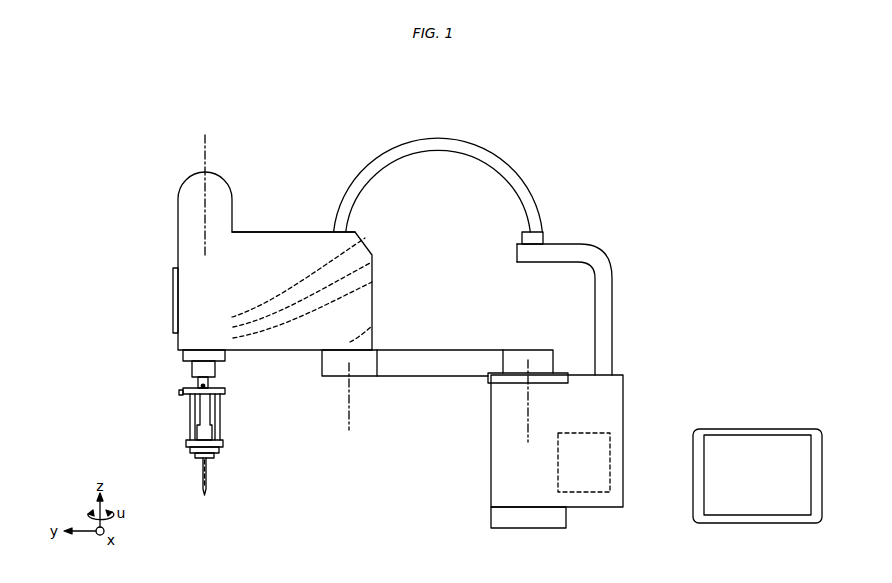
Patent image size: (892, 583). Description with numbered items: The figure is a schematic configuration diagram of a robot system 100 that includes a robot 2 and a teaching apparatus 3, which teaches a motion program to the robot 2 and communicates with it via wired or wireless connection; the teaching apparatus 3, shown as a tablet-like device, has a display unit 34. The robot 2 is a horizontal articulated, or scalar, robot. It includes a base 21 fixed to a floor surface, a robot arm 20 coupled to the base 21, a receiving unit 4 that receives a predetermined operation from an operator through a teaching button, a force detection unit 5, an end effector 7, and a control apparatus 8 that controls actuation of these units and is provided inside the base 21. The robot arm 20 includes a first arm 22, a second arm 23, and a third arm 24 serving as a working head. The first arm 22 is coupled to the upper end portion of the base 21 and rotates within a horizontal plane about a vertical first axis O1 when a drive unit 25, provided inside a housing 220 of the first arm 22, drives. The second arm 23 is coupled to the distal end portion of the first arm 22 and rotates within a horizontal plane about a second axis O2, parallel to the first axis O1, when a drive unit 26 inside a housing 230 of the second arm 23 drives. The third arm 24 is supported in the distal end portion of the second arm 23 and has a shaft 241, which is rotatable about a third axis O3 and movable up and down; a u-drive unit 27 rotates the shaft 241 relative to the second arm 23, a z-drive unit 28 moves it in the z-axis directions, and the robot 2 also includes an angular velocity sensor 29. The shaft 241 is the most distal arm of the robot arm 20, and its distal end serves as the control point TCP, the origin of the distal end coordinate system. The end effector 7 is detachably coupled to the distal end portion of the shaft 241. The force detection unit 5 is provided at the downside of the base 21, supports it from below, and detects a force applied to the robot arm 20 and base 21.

The robot system 100 is at (575, 125).
The robot 2 is at (384, 141).
The teaching apparatus 3 is at (790, 429).
The display unit 34 is at (757, 498).
The receiving unit 4 is at (173, 305).
The force detection unit 5 is at (508, 516).
The end effector 7 is at (225, 413).
The control apparatus 8 is at (610, 466).
The robot arm 20 is at (444, 350).
The base 21 is at (607, 402).
The first arm 22 is at (400, 365).
The housing 220 is at (483, 363).
The second arm 23 is at (190, 238).
The housing 230 is at (281, 228).
The third arm 24 is at (199, 384).
The shaft 241 is at (209, 384).
The drive unit 25 is at (537, 362).
The drive unit 26 is at (372, 328).
The u-drive unit 27 is at (372, 283).
The z-drive unit 28 is at (372, 262).
The angular velocity sensor 29 is at (365, 238).
The first axis O1 is at (528, 430).
The second axis O2 is at (348, 393).
The third axis O3 is at (205, 145).
The control point TCP is at (199, 385).